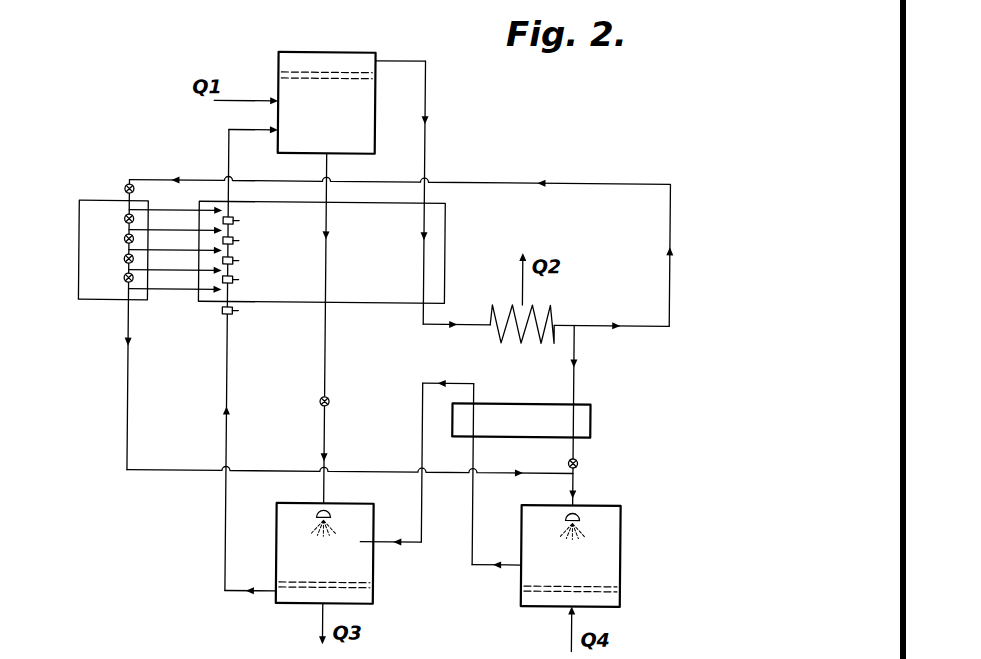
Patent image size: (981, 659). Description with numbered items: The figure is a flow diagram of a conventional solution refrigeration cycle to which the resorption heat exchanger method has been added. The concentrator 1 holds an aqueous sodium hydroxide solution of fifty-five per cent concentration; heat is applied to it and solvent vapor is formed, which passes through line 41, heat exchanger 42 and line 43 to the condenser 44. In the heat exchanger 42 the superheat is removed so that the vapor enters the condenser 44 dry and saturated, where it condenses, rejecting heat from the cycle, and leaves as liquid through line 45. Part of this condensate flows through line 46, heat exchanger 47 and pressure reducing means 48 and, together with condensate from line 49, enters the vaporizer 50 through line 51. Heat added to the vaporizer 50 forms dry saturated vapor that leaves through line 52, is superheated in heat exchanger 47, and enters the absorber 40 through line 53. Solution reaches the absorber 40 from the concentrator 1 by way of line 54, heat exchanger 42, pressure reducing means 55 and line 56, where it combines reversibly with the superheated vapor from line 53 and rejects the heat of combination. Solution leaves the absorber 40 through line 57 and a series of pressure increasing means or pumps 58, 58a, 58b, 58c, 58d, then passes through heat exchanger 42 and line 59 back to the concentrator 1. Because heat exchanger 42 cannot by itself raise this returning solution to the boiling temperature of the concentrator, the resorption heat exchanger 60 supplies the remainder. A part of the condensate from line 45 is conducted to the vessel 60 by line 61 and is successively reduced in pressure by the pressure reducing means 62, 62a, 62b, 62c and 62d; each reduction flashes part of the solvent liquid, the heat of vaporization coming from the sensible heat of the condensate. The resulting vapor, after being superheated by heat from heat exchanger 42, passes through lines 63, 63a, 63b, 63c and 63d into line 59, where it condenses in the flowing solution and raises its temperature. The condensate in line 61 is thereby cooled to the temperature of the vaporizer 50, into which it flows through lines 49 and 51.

The concentrator 1 is at (276, 57).
The absorber 40 is at (278, 509).
The line 41 is at (396, 61).
The heat exchanger 42 is at (446, 242).
The line 43 is at (422, 327).
The condenser 44 is at (520, 341).
The line 45 is at (563, 323).
The line 46 is at (577, 380).
The heat exchanger 47 is at (592, 423).
The pressure reducing means 48 is at (579, 463).
The line 49 is at (537, 472).
The vaporizer 50 is at (622, 540).
The line 51 is at (578, 499).
The line 52 is at (474, 566).
The line 53 is at (422, 545).
The line 54 is at (328, 266).
The pressure reducing means 55 is at (330, 400).
The line 56 is at (328, 440).
The line 57 is at (227, 549).
The pressure increasing means 58 is at (239, 222).
The pressure increasing means 58a is at (239, 242).
The pressure increasing means 58b is at (239, 262).
The pressure increasing means 58c is at (239, 281).
The pressure increasing means 58d is at (240, 312).
The line 59 is at (227, 144).
The resorption heat exchanger 60 is at (78, 293).
The line 61 is at (671, 323).
The pressure reducing means 62 is at (123, 189).
The pressure reducing means 62a is at (123, 220).
The pressure reducing means 62b is at (123, 240).
The pressure reducing means 62c is at (123, 260).
The pressure reducing means 62d is at (123, 279).
The line 63 is at (163, 212).
The line 63a is at (155, 231).
The line 63b is at (155, 251).
The line 63c is at (155, 271).
The line 63d is at (155, 291).